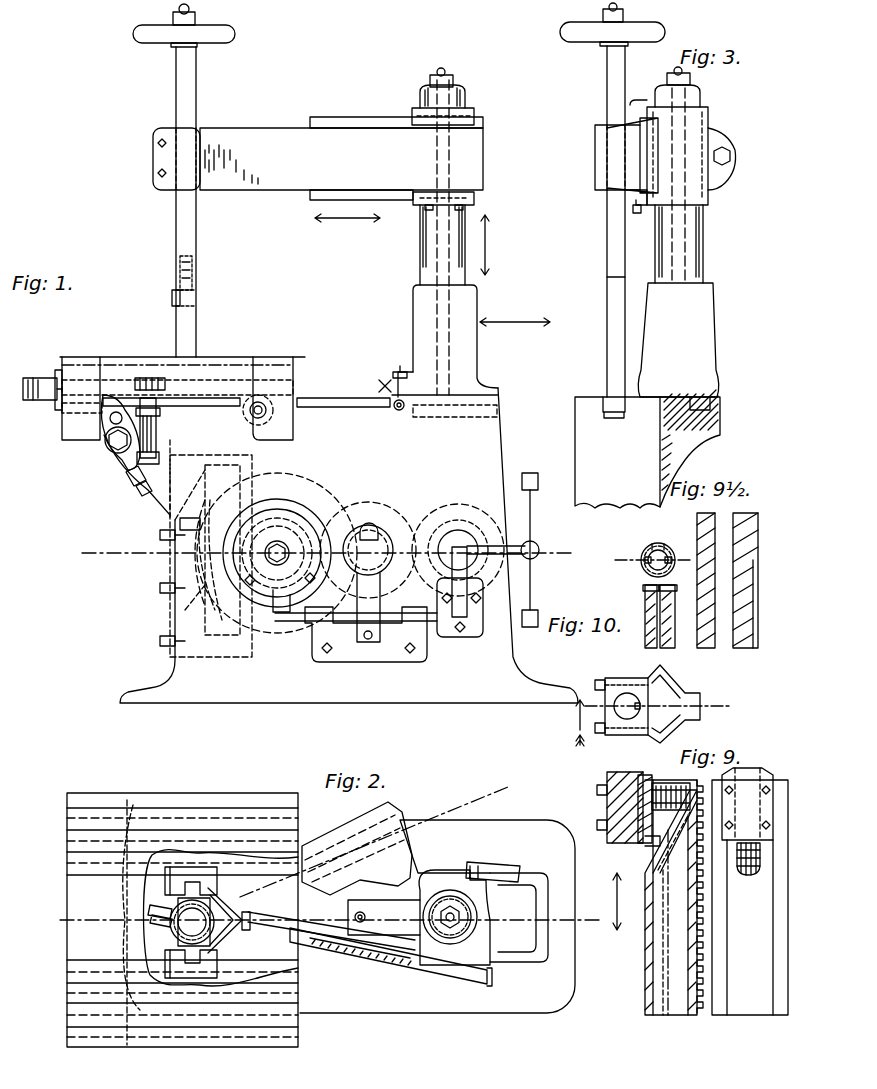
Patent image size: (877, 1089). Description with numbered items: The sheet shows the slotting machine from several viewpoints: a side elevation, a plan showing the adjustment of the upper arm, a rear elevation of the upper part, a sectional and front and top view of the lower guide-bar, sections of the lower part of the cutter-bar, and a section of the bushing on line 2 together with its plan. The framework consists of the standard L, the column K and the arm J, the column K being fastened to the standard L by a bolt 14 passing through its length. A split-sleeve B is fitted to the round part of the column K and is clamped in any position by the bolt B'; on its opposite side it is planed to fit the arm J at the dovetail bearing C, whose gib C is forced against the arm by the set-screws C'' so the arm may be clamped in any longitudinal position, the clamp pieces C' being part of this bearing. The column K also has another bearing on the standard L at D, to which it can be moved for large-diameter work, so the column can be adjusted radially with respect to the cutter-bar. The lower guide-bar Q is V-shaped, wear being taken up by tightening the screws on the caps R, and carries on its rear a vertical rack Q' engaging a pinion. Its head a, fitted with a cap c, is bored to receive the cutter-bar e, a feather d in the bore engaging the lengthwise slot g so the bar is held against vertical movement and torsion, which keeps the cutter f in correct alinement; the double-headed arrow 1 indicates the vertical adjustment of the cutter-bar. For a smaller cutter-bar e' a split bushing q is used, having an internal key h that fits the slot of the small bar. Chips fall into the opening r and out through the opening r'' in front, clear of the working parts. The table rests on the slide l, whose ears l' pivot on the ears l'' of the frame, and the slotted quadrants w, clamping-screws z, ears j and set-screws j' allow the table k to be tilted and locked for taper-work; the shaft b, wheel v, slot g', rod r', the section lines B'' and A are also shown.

In FIG. 1, the bolt 14 is at (441, 70).
In FIG. 1, the vertical shaft b is at (184, 180).
In FIG. 3, the vertical shaft b is at (612, 200).
In FIG. 1, the arm J is at (318, 158).
In FIG. 3, the arm J is at (616, 155).
In FIG. 2, the arm J is at (330, 930).
In FIG. 1, the split-sleeve B is at (454, 237).
In FIG. 3, the split-sleeve B is at (677, 175).
In FIG. 2, the split-sleeve B is at (514, 917).
In FIG. 3, the bolt B' is at (725, 155).
In FIG. 2, the bolt B' is at (493, 865).
In FIG. 1, the section line B'' is at (316, 553).
In FIG. 1, the bearing/gib C is at (432, 109).
In FIG. 3, the bearing/gib C is at (638, 91).
In FIG. 2, the bearing/gib C is at (391, 957).
In FIG. 1, the clamp piece C' is at (464, 220).
In FIG. 3, the clamp piece C' is at (636, 209).
In FIG. 1, the set-screws C'' is at (435, 213).
In FIG. 3, the set-screws C'' is at (644, 225).
In FIG. 1, the column K is at (448, 341).
In FIG. 3, the column K is at (678, 340).
In FIG. 2, the column K is at (278, 920).
In FIG. 1, the standard L is at (349, 545).
In FIG. 3, the standard L is at (617, 452).
In FIG. 2, the standard L is at (437, 916).
In FIG. 1, the bearing D is at (352, 388).
In FIG. 3, the bearing D is at (661, 448).
In FIG. 2, the bearing D is at (374, 842).
In FIG. 1, the table k is at (164, 389).
In FIG. 1, the cutter f is at (173, 281).
In FIG. 1, the cutter-bar e is at (178, 313).
In FIG. 3, the cutter-bar e is at (596, 313).
The cutter-bar e is at (753, 580).
In FIG. 10, the cutter-bar e is at (626, 755).
In FIG. 9, the cutter-bar e is at (637, 793).
The small cutter-bar e' is at (714, 580).
In FIG. 1, the slide l is at (175, 383).
In FIG. 1, the lugs or ears l' is at (254, 413).
In FIG. 1, the ears l'' is at (171, 407).
In FIG. 1, the slotted quadrants w is at (135, 431).
In FIG. 1, the clamping-screws z is at (108, 448).
In FIG. 1, the ears j is at (128, 487).
In FIG. 1, the set-screws j' is at (143, 500).
In FIG. 2, the set-screws j' is at (160, 923).
In FIG. 1, the lower guide-bar Q is at (211, 551).
In FIG. 10, the lower guide-bar Q is at (674, 704).
In FIG. 9, the lower guide-bar Q is at (716, 897).
In FIG. 2, the lower guide-bar Q is at (221, 918).
In FIG. 10, the vertical rack Q' is at (713, 687).
In FIG. 9, the vertical rack Q' is at (681, 914).
In FIG. 2, the vertical rack Q' is at (257, 911).
In FIG. 1, the head a is at (190, 496).
In FIG. 10, the head a is at (645, 743).
In FIG. 9, the head a is at (768, 770).
In FIG. 1, the cap c is at (164, 477).
In FIG. 10, the cap c is at (621, 714).
In FIG. 9, the cap c is at (685, 802).
In FIG. 2, the cap c is at (190, 920).
In FIG. 1, the caps R is at (168, 588).
In FIG. 2, the caps R is at (185, 919).
In FIG. 1, the wheel v is at (276, 553).
The key or feather h is at (648, 552).
The bushing q is at (658, 588).
The slot g is at (766, 655).
The plate g' is at (698, 659).
The section line 2 is at (645, 560).
In FIG. 10, the section line A is at (666, 700).
In FIG. 10, the feather or key d is at (638, 703).
In FIG. 9, the feather or key d is at (640, 845).
In FIG. 10, the opening r is at (662, 717).
In FIG. 9, the opening r is at (671, 787).
In FIG. 2, the opening r is at (225, 920).
In FIG. 9, the spring rod r' is at (674, 841).
In FIG. 9, the opening r'' is at (698, 867).
In FIG. 9, the double-headed arrow 1 is at (610, 901).